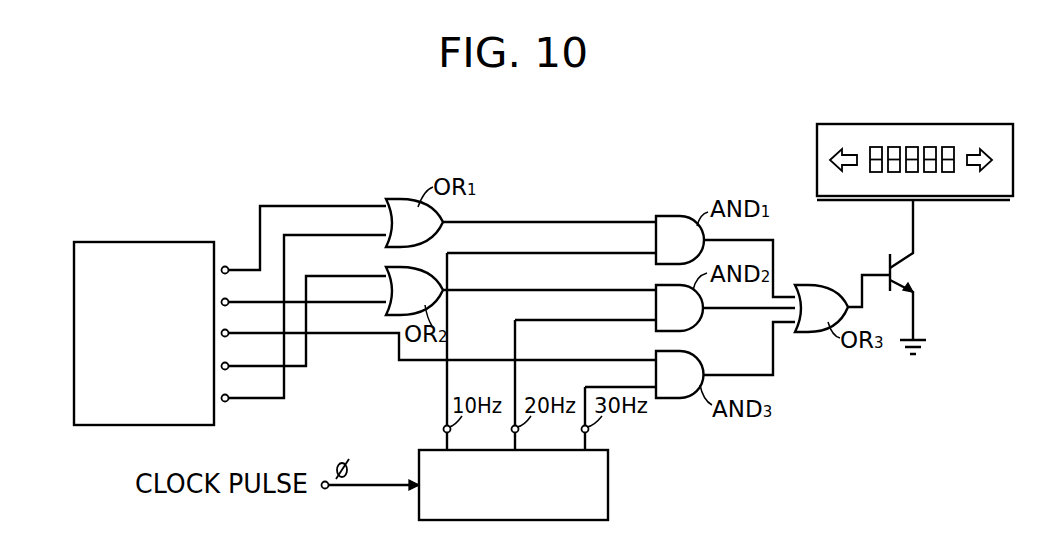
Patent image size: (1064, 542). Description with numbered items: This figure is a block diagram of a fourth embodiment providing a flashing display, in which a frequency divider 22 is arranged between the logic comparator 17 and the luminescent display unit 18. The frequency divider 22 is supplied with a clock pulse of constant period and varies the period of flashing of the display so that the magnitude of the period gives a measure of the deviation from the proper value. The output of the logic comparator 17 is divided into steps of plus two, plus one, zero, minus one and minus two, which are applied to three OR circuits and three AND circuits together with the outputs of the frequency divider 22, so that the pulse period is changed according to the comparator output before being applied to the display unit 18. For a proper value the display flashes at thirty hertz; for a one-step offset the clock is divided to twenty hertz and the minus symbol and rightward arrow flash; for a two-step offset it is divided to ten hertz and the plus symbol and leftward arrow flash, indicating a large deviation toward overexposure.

The logic comparator 17 is at (141, 243).
The luminescent display unit 18 is at (1008, 181).
The frequency divider 22 is at (608, 507).